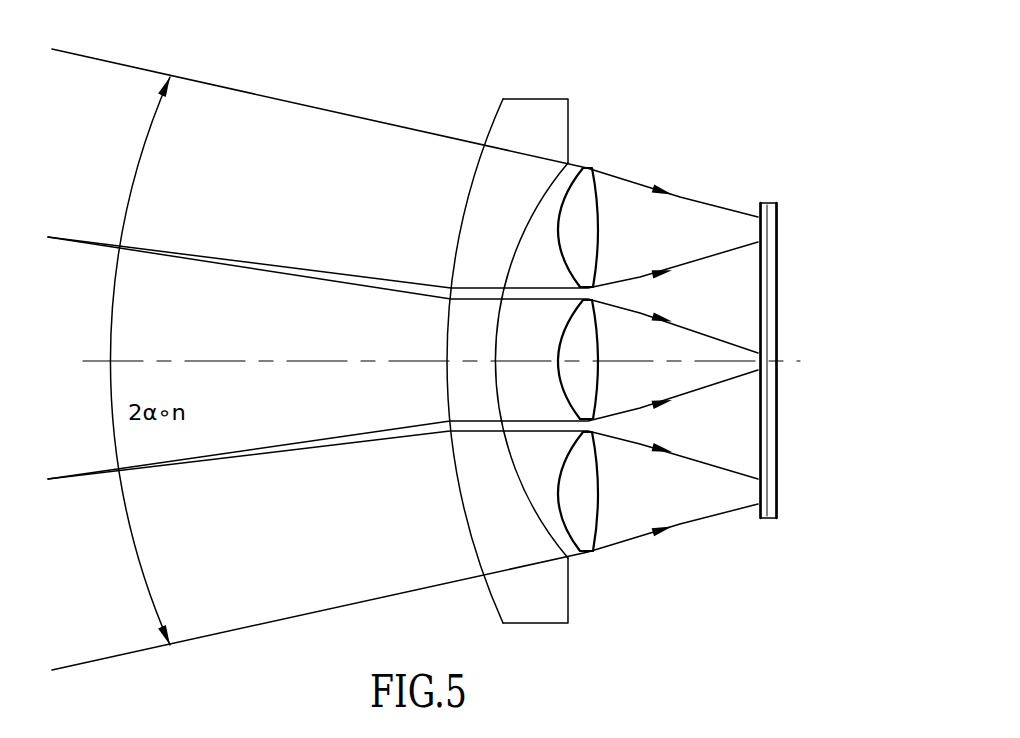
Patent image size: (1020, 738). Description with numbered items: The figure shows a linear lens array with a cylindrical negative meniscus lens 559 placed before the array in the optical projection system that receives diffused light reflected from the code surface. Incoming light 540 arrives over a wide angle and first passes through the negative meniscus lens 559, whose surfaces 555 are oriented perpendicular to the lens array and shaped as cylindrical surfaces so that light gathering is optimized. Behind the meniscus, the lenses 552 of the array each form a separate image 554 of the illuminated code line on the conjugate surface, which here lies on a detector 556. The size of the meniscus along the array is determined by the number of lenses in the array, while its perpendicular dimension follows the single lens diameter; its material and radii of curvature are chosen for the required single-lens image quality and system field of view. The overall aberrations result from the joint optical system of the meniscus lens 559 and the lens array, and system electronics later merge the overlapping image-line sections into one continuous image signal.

The incident light beam 540 is at (310, 108).
The negative meniscus lens 559 is at (538, 99).
The surfaces 555 is at (537, 515).
The lenslets 552 is at (590, 220).
The detector elements 554 is at (750, 228).
The detector array 556 is at (767, 520).